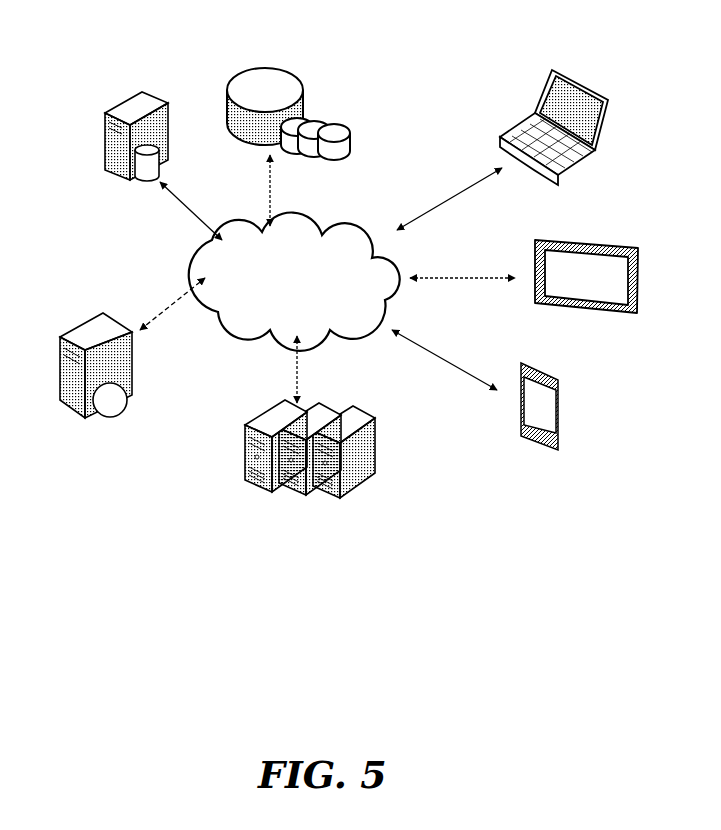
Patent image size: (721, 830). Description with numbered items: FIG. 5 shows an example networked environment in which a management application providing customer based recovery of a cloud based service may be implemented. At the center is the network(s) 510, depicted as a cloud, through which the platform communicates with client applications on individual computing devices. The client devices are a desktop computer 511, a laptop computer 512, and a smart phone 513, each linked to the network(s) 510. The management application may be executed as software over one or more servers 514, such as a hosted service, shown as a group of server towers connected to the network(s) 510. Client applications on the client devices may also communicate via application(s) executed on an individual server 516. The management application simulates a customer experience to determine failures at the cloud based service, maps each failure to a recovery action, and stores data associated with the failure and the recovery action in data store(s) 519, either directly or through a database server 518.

The network(s) 510 is at (303, 212).
The desktop computer 511 is at (585, 72).
The laptop computer 512 is at (613, 228).
The smart phone 513 is at (565, 380).
The servers 514 is at (268, 405).
The individual server 516 is at (78, 325).
The database server 518 is at (136, 190).
The data store(s) 519 is at (278, 48).